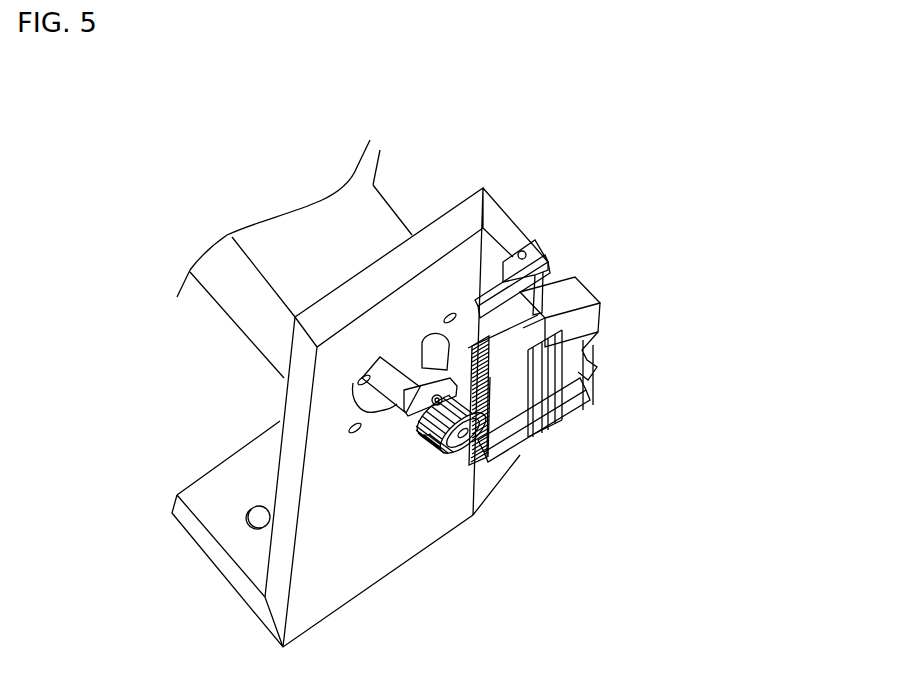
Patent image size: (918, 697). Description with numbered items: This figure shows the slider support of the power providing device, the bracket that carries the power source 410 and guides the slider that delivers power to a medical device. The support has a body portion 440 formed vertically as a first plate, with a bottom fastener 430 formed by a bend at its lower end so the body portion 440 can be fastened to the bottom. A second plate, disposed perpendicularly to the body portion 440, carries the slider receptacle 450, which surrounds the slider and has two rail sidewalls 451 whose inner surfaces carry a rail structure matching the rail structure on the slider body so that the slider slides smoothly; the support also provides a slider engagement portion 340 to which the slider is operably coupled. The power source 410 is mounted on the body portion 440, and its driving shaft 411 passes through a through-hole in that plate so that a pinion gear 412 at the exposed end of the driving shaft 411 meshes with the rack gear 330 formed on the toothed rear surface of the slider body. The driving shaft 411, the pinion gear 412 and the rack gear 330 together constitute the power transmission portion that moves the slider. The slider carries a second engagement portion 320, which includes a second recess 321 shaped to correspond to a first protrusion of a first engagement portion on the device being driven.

The power source 410 is at (355, 198).
The driving shaft 411 is at (400, 397).
The pinion gear 412 is at (423, 460).
The rack gear 330 is at (480, 452).
The second engagement portion 320 is at (600, 315).
The second recess 321 is at (582, 362).
The slider engagement portion 340 is at (540, 286).
The slider receptacle 450 is at (633, 366).
The rail sidewalls 451 is at (500, 275).
The bottom fastener 430 is at (188, 522).
The body portion 440 is at (323, 527).